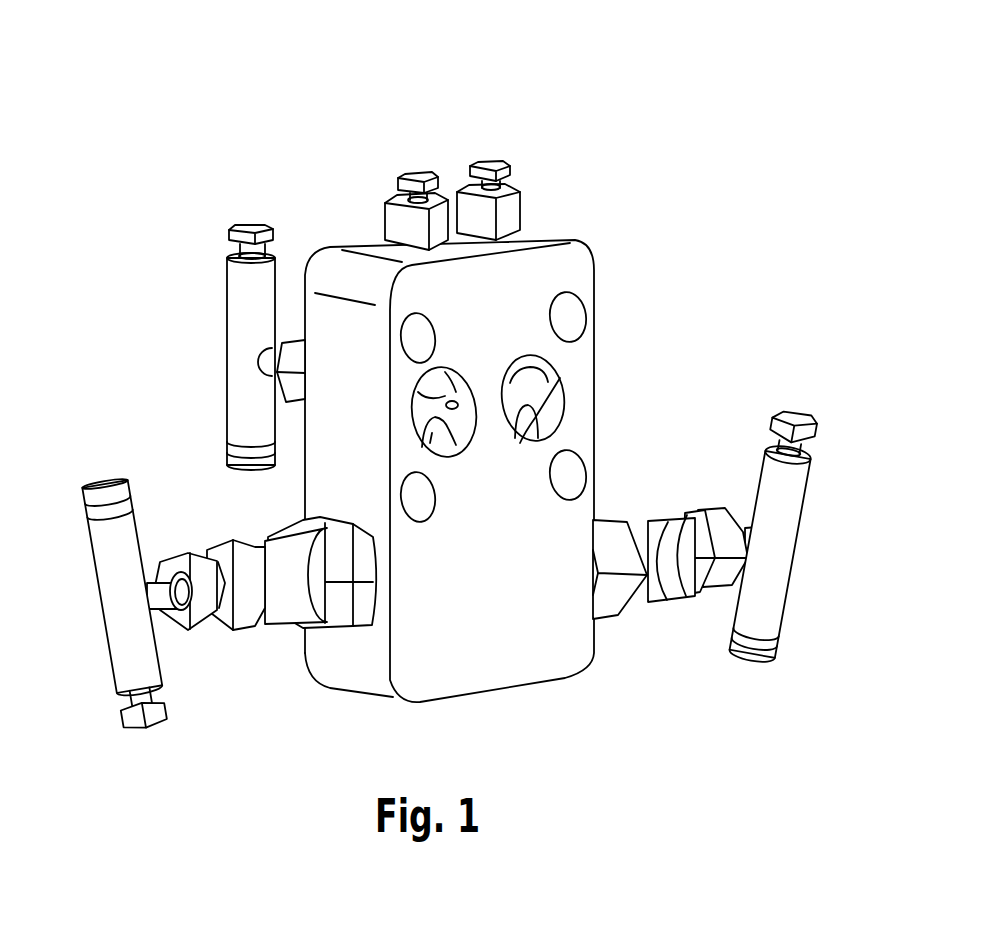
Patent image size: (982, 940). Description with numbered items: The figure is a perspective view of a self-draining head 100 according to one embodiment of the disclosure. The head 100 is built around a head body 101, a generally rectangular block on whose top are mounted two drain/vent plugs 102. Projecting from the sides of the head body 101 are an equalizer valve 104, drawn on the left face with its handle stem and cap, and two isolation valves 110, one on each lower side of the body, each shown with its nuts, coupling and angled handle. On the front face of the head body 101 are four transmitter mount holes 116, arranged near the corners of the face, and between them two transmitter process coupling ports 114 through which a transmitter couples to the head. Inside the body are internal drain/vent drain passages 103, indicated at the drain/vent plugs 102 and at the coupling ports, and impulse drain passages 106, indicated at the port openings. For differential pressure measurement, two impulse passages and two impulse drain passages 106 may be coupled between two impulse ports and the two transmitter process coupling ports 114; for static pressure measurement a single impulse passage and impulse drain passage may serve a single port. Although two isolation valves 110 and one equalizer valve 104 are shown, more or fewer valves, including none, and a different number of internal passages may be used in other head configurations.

The self-draining head 100 is at (690, 150).
The head body 101 is at (594, 263).
The drain/vent plugs 102 is at (480, 162).
The internal drain/vent drain passages 103 is at (540, 378).
The equalizer valve 104 is at (227, 320).
The impulse drain passages 106 is at (424, 452).
The isolation valves 110 is at (225, 633).
The transmitter process coupling ports 114 is at (472, 445).
The transmitter mount holes 116 is at (585, 300).